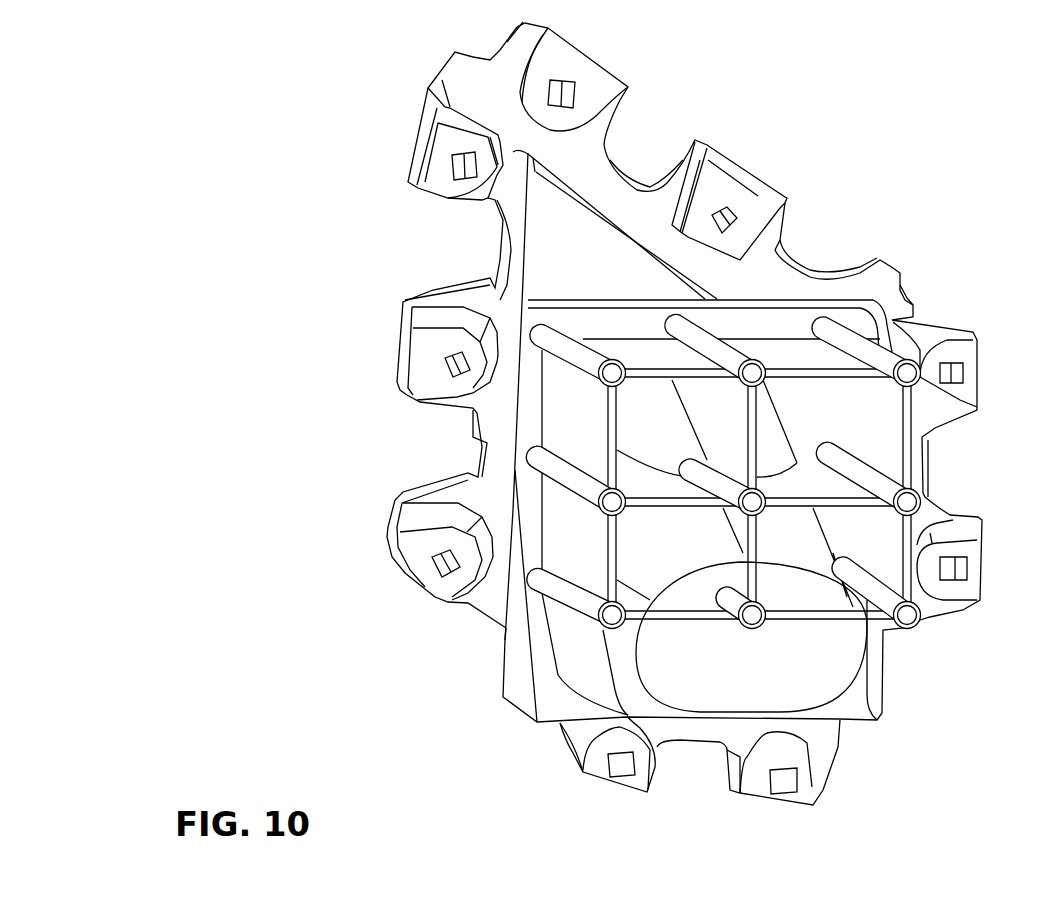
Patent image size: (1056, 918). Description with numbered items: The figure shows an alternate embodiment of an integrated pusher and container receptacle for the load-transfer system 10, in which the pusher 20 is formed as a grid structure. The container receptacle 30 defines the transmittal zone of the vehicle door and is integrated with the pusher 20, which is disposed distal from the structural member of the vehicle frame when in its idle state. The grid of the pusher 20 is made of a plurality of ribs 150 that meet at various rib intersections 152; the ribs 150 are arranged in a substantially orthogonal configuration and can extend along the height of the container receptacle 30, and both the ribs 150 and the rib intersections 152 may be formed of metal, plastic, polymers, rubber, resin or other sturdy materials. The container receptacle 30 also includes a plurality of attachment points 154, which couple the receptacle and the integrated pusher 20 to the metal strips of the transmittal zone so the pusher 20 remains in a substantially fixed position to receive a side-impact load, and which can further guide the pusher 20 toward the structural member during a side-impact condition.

The load-transfer system 10 is at (322, 62).
The pusher 20 is at (820, 617).
The container receptacle 30 is at (543, 278).
The ribs 150 is at (913, 437).
The rib intersections 152 is at (921, 488).
The attachment points 154 is at (730, 210).